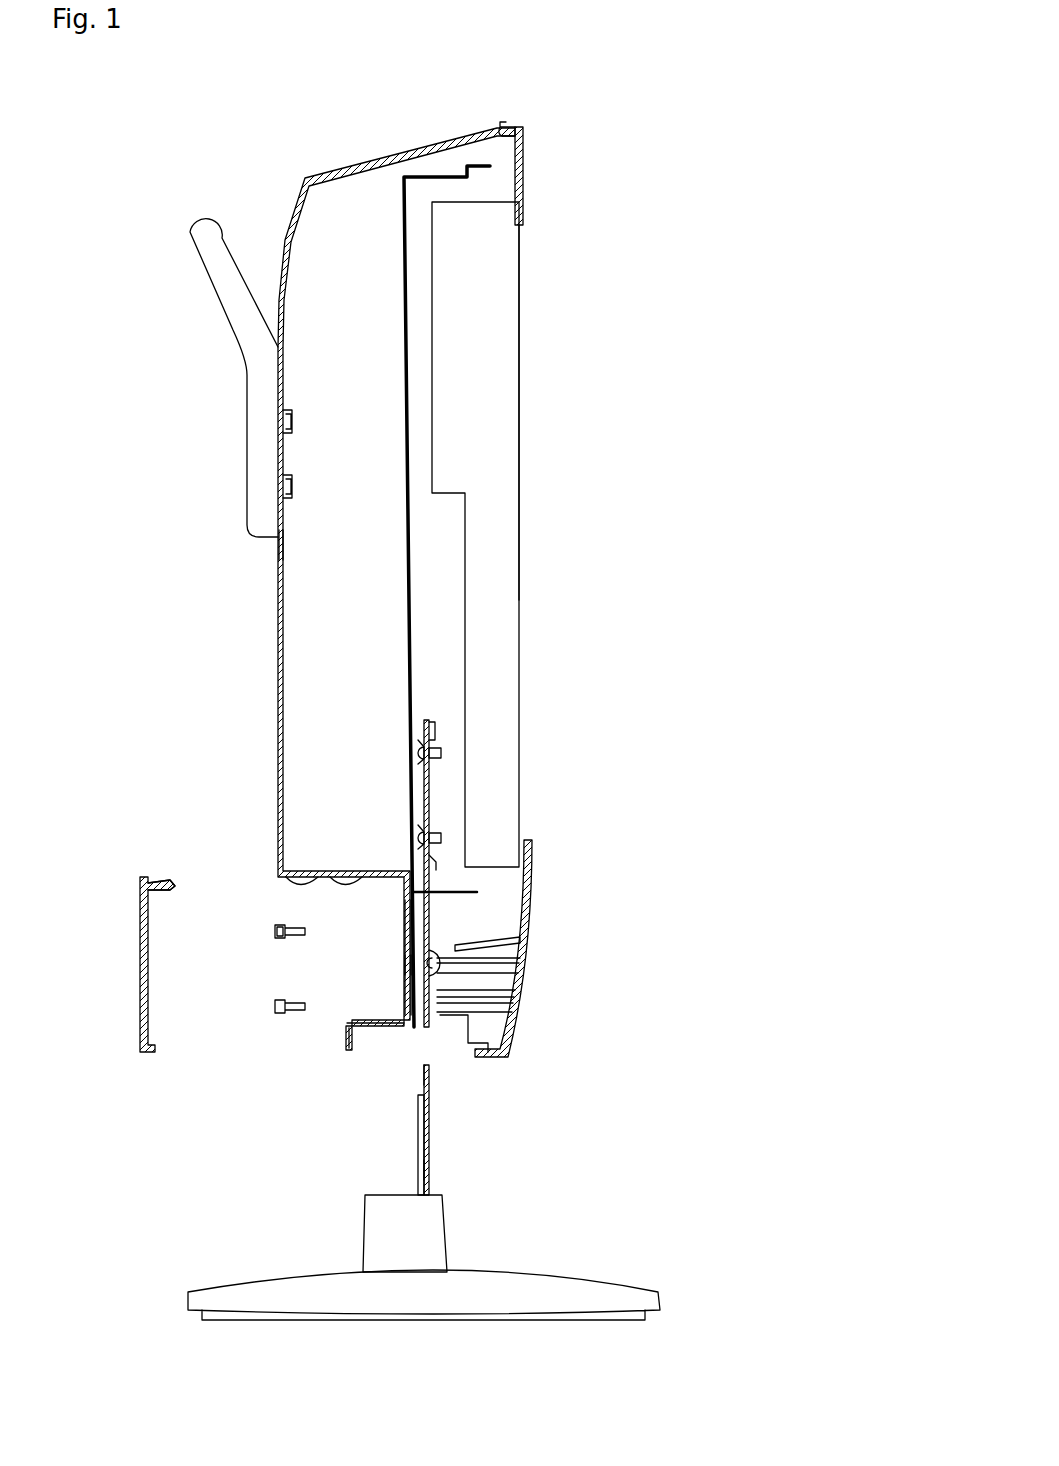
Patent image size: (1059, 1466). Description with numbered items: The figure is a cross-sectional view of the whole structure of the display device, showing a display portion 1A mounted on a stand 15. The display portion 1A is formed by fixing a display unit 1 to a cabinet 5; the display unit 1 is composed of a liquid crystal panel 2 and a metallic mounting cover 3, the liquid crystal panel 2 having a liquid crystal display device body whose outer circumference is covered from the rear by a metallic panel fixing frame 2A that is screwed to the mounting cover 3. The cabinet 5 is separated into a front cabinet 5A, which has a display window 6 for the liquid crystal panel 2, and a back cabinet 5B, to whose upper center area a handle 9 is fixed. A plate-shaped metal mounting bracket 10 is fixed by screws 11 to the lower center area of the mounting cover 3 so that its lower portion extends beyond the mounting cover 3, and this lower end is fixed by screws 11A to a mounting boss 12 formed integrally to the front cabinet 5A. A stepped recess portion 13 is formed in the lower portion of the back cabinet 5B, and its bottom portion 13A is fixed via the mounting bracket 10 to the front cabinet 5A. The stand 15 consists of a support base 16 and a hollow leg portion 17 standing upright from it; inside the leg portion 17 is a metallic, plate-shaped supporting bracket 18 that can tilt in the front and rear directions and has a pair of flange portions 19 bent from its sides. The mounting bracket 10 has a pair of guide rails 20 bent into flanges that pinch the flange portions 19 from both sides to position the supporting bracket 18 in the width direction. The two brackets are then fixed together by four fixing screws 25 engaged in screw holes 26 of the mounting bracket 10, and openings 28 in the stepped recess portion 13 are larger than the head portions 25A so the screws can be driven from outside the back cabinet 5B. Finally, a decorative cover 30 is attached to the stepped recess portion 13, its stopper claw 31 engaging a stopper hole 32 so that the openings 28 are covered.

The display unit 1 is at (483, 82).
The display portion 1A is at (535, 343).
The liquid crystal panel 2 is at (474, 242).
The panel fixing frame 2A is at (493, 407).
The mounting cover 3 is at (404, 200).
The cabinet 5 is at (280, 212).
The front cabinet 5A is at (523, 183).
The back cabinet 5B is at (280, 542).
The display window 6 is at (532, 836).
The handle 9 is at (207, 240).
The mounting bracket 10 is at (429, 793).
The screws 11 is at (425, 837).
The screws 11A is at (497, 941).
The mounting boss 12 is at (569, 986).
The stepped recess portion 13 is at (310, 875).
The bottom portion 13A is at (408, 964).
The stand 15 is at (664, 1274).
The support base 16 is at (596, 1288).
The leg portion 17 is at (400, 1242).
The supporting bracket 18 is at (429, 1142).
The flange portions 19 is at (418, 1158).
The guide rails 20 is at (416, 1027).
The fixing screws 25 is at (305, 1002).
The head portions 25A is at (278, 1002).
The screw holes 26 is at (429, 1092).
The openings 28 is at (406, 930).
The decorative cover 30 is at (140, 935).
The stopper claw 31 is at (150, 870).
The stopper hole 32 is at (300, 891).